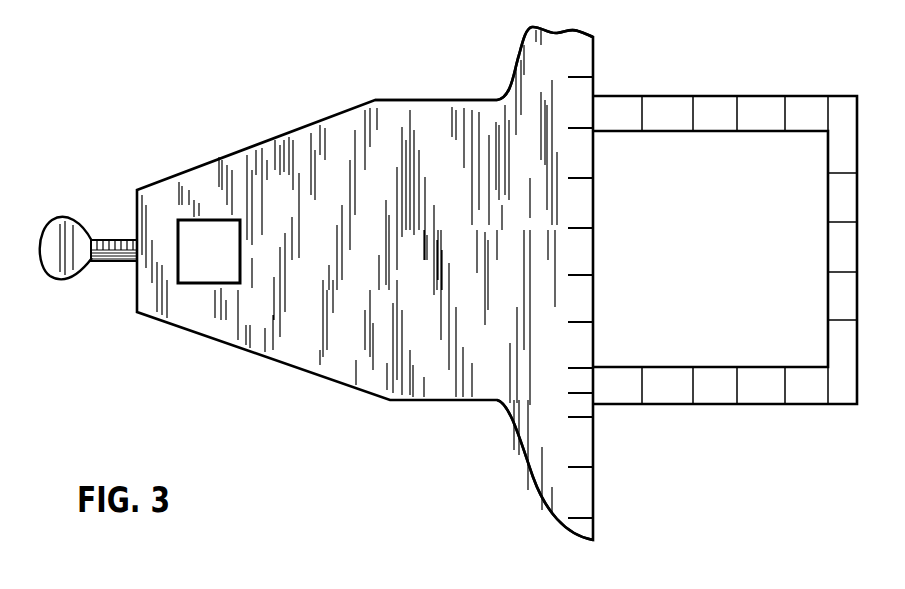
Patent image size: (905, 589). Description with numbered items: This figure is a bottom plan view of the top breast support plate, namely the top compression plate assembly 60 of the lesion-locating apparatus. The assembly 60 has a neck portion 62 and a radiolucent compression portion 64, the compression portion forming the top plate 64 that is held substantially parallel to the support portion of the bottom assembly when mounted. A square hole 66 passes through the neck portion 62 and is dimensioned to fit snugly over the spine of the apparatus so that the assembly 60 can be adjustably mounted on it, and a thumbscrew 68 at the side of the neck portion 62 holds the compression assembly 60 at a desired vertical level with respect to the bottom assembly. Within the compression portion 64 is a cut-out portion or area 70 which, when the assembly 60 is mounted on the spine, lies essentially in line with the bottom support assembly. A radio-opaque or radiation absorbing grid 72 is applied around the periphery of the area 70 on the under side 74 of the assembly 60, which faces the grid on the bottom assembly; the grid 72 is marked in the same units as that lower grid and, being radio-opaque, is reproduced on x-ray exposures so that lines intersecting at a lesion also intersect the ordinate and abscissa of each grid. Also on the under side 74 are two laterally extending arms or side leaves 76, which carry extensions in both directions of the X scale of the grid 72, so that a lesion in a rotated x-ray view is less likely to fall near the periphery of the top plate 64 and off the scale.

The top compression plate assembly 60 is at (206, 94).
The neck portion 62 is at (197, 318).
The compression portion 64 is at (713, 95).
The square hole 66 is at (236, 284).
The thumbscrew 68 is at (60, 219).
The cut-out portion 70 is at (675, 348).
The radio-opaque grid 72 is at (737, 389).
The under side 74 is at (397, 110).
The laterally extending arms 76 is at (563, 53).